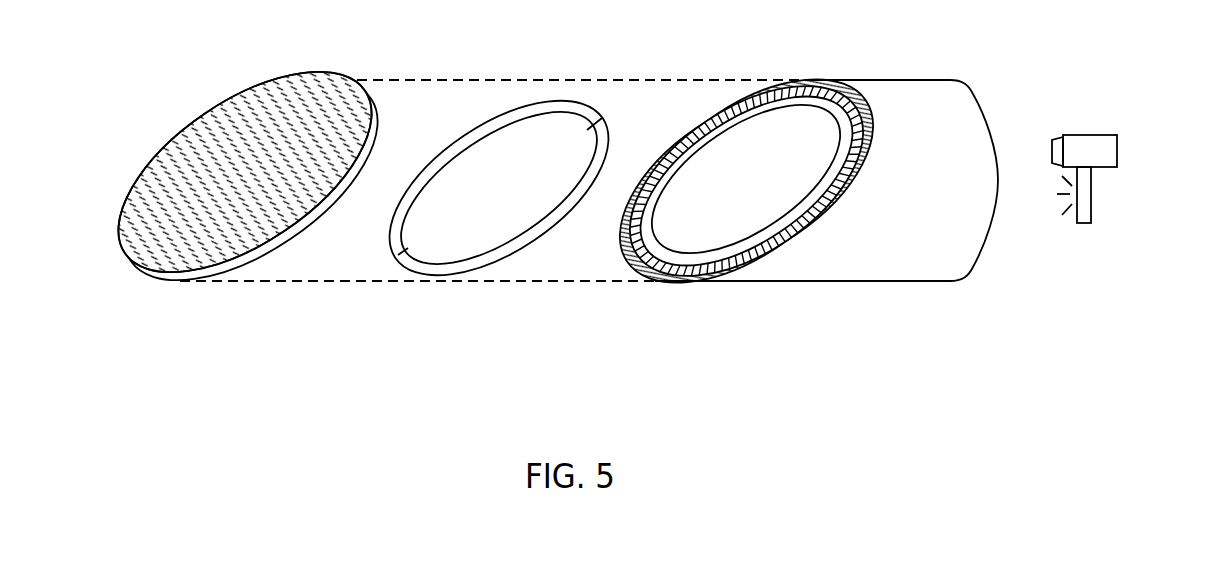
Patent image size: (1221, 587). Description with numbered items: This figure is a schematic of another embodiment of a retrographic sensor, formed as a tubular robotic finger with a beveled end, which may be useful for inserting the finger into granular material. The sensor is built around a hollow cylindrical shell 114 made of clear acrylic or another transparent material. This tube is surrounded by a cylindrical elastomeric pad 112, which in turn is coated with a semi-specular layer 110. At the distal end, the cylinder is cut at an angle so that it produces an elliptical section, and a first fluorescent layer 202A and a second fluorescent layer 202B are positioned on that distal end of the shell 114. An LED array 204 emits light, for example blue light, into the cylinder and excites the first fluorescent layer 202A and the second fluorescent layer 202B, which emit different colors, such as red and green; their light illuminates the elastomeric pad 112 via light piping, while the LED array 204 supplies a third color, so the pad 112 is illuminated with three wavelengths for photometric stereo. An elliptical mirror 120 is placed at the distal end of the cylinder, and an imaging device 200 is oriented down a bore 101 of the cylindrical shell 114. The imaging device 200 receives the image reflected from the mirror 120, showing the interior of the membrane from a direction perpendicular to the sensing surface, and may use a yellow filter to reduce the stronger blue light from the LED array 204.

The bore 101 is at (772, 190).
The semi-specular layer 110 is at (916, 95).
The cylindrical elastomeric pad 112 is at (838, 83).
The hollow cylindrical shell 114 is at (812, 188).
The elliptical mirror 120 is at (248, 157).
The imaging device 200 is at (1117, 136).
The first fluorescent layer 202A is at (505, 117).
The second fluorescent layer 202B is at (516, 248).
The LED array 204 is at (1092, 195).